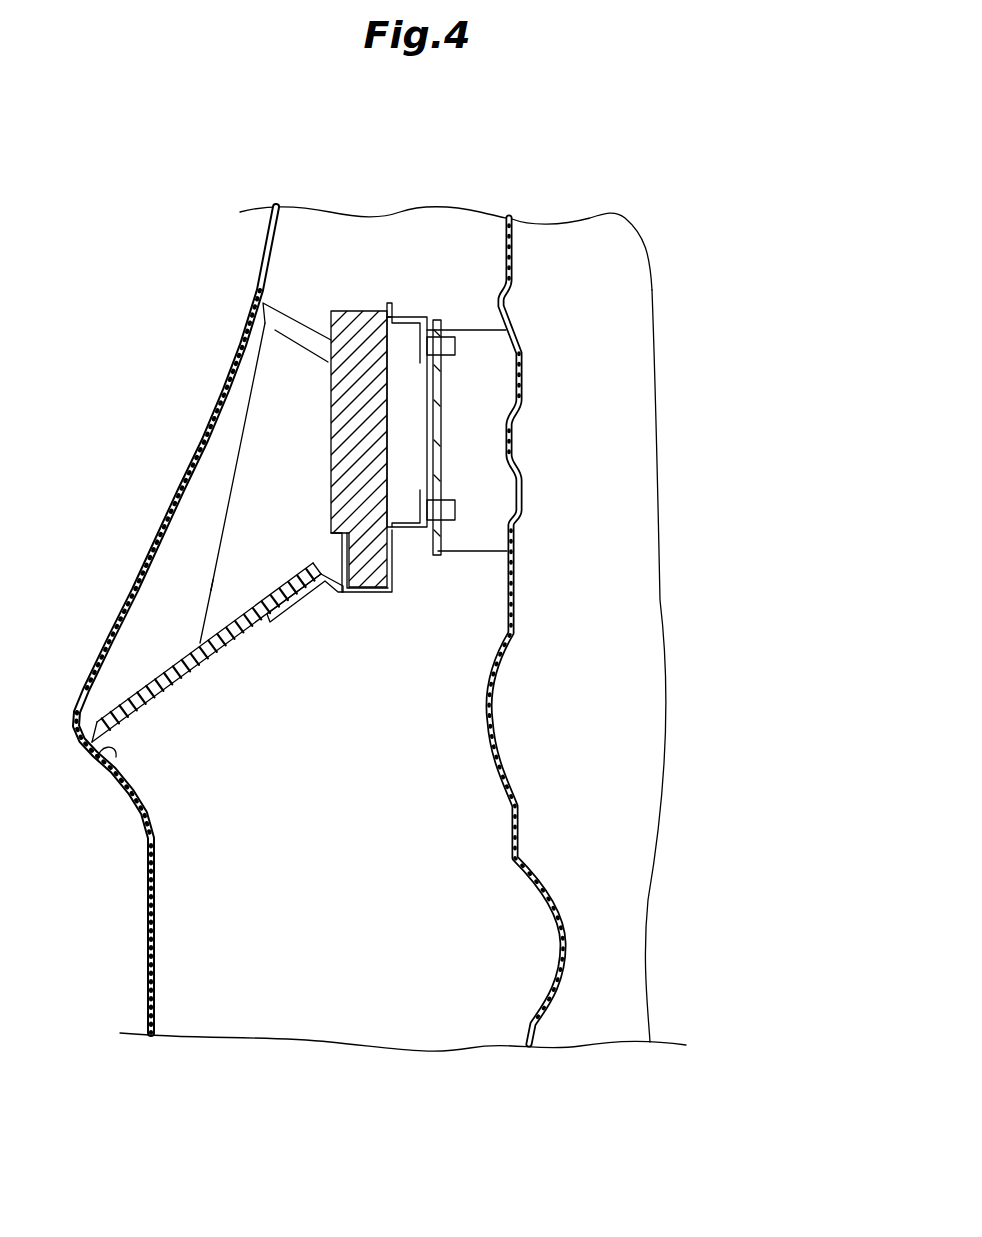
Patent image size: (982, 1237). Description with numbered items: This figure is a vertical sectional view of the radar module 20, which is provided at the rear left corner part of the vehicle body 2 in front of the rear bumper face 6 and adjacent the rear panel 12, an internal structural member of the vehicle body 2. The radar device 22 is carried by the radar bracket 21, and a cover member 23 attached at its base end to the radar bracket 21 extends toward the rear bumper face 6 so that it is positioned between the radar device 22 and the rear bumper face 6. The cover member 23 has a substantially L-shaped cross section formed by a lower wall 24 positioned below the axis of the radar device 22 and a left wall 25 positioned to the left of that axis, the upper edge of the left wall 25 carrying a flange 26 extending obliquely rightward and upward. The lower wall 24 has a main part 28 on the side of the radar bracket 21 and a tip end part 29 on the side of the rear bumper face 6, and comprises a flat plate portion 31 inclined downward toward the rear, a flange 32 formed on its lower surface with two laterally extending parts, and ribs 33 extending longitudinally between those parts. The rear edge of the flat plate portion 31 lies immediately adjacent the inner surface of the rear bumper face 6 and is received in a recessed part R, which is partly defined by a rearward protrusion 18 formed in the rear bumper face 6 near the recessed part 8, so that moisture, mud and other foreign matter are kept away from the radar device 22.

The vehicle body 2 is at (250, 198).
The rear bumper face 6 is at (118, 600).
The recessed part 8 is at (135, 808).
The rear panel 12 is at (515, 601).
The rearward protrusion 18 is at (158, 828).
The radar module 20 is at (388, 282).
The radar bracket 21 is at (473, 343).
The radar device 22 is at (357, 325).
The cover member 23 is at (218, 497).
The lower wall 24 is at (184, 675).
The left wall 25 is at (278, 407).
The flange 26 is at (292, 336).
The main part 28 is at (297, 632).
The tip end part 29 is at (139, 712).
The flat plate portion 31 is at (222, 621).
The flange 32 is at (262, 628).
The ribs 33 is at (322, 596).
The recessed part R is at (103, 766).